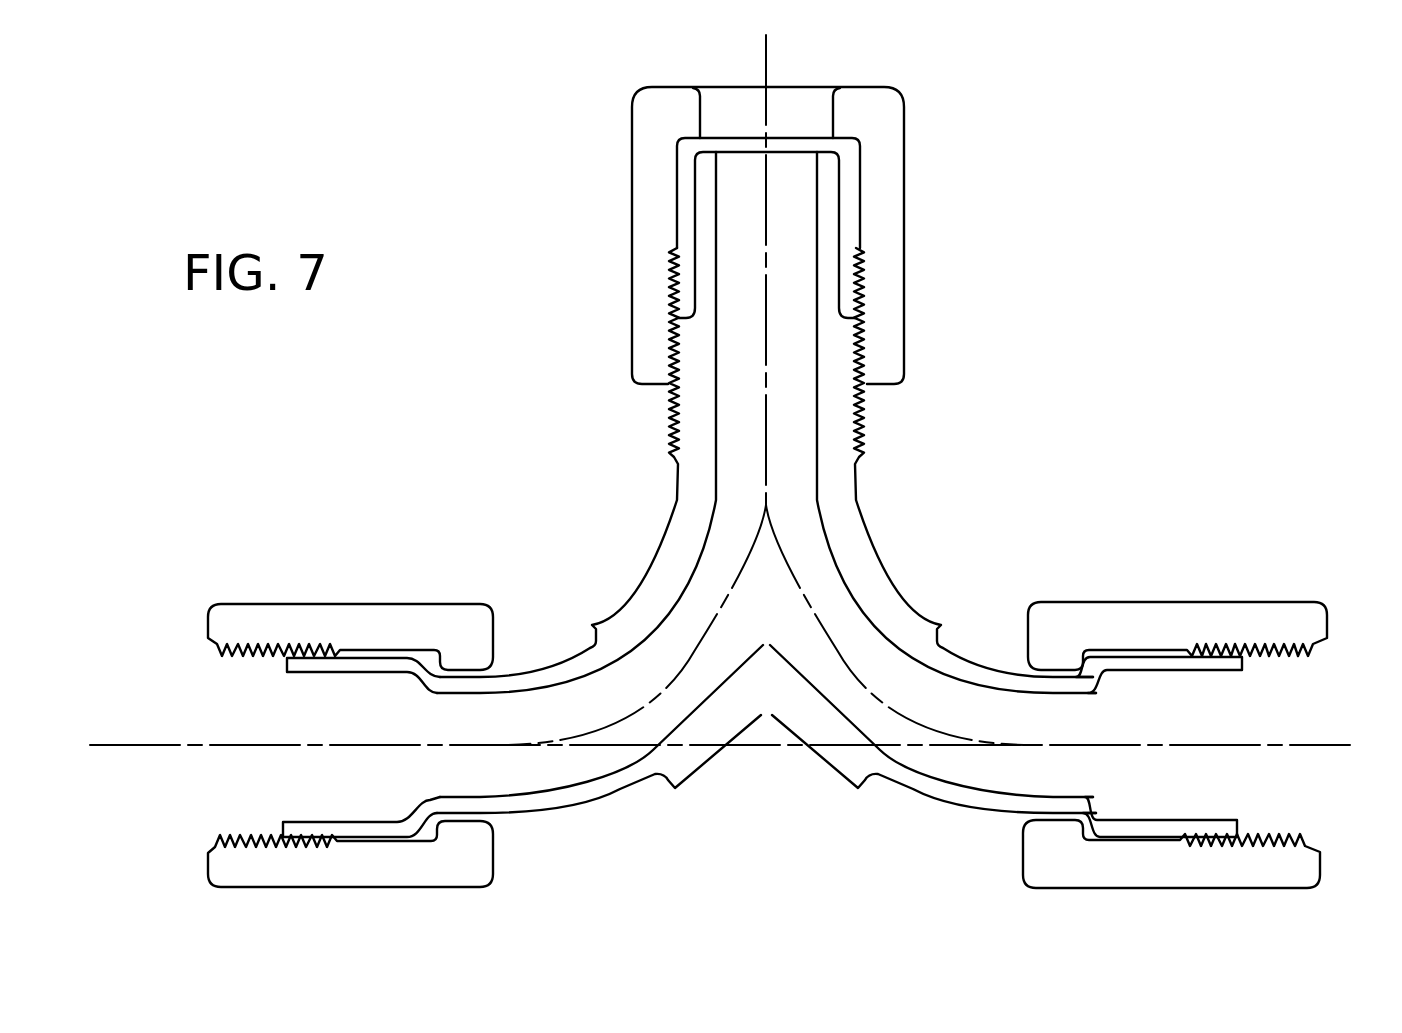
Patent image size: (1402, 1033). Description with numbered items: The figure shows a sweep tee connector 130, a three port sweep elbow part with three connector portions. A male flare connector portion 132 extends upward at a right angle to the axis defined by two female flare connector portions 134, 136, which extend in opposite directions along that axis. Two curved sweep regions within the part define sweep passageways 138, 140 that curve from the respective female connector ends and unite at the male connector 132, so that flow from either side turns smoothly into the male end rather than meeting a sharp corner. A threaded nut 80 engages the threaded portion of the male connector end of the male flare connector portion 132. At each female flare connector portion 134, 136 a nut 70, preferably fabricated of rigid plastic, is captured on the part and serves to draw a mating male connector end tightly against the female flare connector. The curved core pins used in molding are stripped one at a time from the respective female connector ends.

The sweep tee connector 130 is at (522, 499).
The threaded nut 80 is at (630, 237).
The male flare connector portion 132 is at (693, 202).
The sweep passageway 138 is at (583, 753).
The sweep passageway 140 is at (863, 645).
The female flare connector portion 134 is at (357, 673).
The female flare connector portion 136 is at (1153, 672).
The nut 70 is at (323, 604).